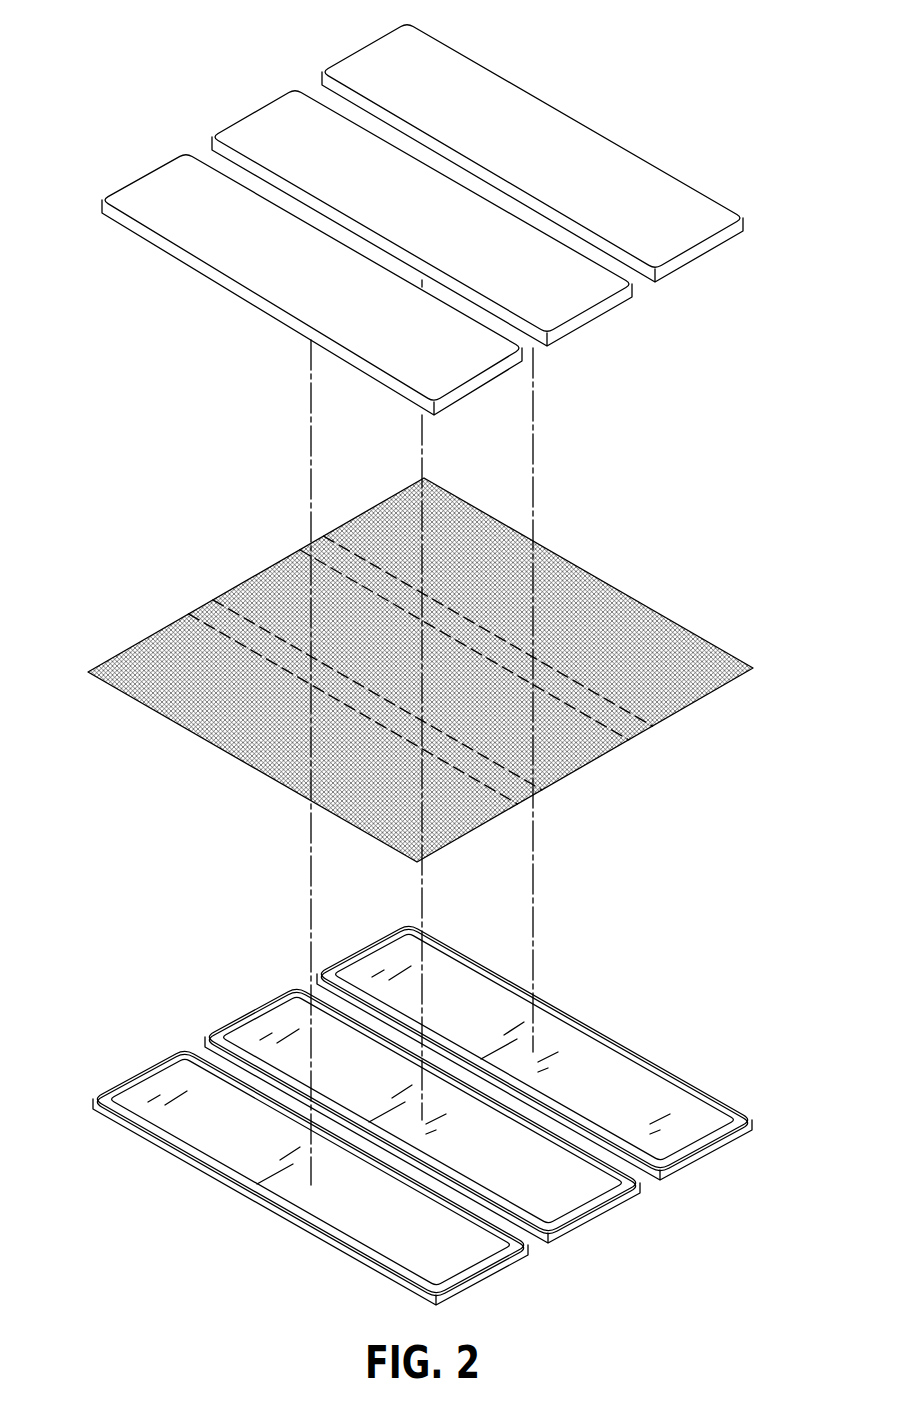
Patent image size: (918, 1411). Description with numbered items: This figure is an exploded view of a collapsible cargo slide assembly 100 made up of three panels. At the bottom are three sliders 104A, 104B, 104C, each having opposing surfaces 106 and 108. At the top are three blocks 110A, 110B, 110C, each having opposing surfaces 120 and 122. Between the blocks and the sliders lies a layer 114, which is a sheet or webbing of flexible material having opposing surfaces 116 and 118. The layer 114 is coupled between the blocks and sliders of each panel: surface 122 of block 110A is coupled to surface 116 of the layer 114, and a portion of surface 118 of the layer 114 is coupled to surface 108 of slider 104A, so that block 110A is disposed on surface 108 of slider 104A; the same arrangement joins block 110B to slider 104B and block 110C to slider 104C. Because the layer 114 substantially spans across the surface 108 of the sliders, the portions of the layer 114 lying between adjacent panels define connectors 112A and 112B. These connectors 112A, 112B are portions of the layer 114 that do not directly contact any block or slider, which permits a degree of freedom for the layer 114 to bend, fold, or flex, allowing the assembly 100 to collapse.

The assembly 100 is at (756, 74).
The slider 104A is at (496, 1294).
The slider 104B is at (606, 1227).
The slider 104C is at (714, 1164).
The surface 106 is at (228, 1196).
The surface 108 is at (167, 1130).
The block 110A is at (130, 172).
The block 110B is at (241, 106).
The block 110C is at (356, 44).
The connector 112A is at (540, 796).
The connector 112B is at (641, 736).
The layer 114 is at (607, 560).
The surface 116 is at (148, 693).
The surface 118 is at (236, 757).
The surface 120 is at (182, 233).
The surface 122 is at (266, 314).